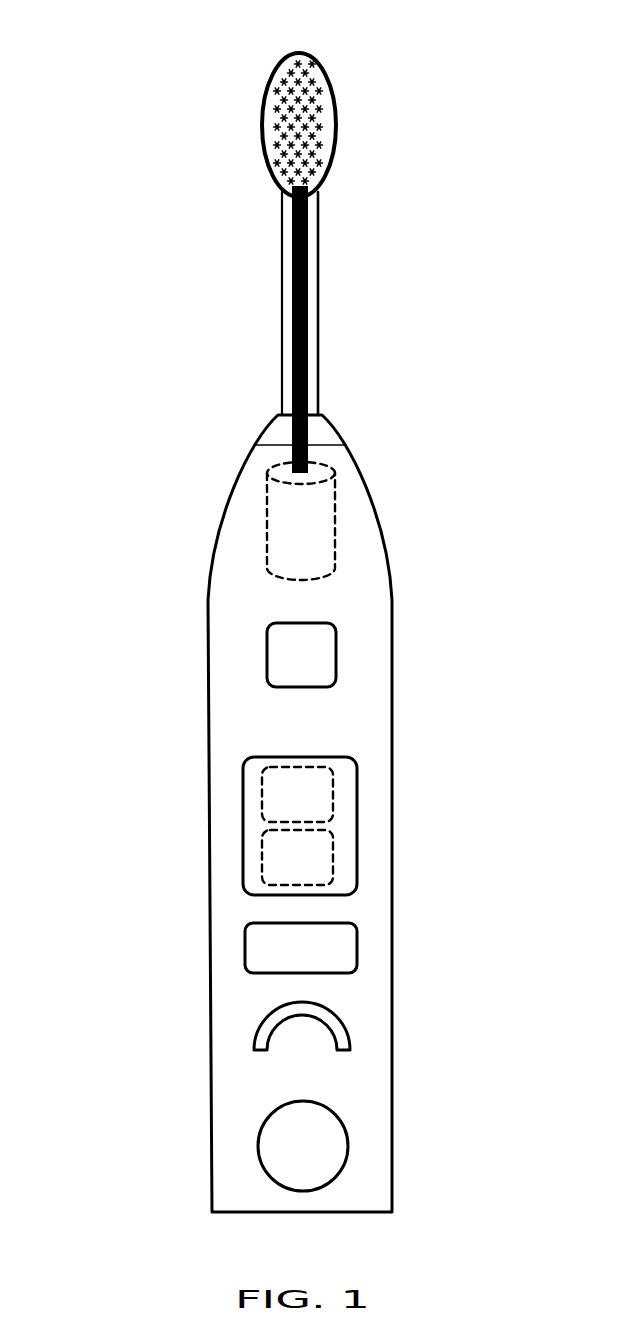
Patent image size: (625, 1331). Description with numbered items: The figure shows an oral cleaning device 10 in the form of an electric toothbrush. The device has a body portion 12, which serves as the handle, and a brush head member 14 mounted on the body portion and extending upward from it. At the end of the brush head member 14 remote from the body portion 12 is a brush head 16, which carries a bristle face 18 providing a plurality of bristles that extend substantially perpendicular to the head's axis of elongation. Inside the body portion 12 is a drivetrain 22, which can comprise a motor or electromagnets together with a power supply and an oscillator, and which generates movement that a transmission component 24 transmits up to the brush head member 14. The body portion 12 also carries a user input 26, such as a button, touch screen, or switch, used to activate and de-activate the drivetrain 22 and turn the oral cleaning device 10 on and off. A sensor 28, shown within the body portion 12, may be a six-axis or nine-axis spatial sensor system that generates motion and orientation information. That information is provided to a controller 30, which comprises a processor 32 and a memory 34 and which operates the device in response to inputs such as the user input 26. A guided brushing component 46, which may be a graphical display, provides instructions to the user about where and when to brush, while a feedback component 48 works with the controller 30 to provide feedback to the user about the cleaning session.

The oral cleaning device 10 is at (118, 78).
The body portion 12 is at (166, 612).
The brush head member 14 is at (266, 308).
The brush head 16 is at (262, 142).
The bristle face 18 is at (333, 123).
The drivetrain 22 is at (325, 520).
The transmission component 24 is at (303, 333).
The user input 26 is at (253, 1148).
The sensor 28 is at (327, 651).
The controller 30 is at (252, 835).
The processor 32 is at (327, 793).
The memory 34 is at (327, 856).
The guided brushing component 46 is at (350, 947).
The feedback component 48 is at (253, 1042).